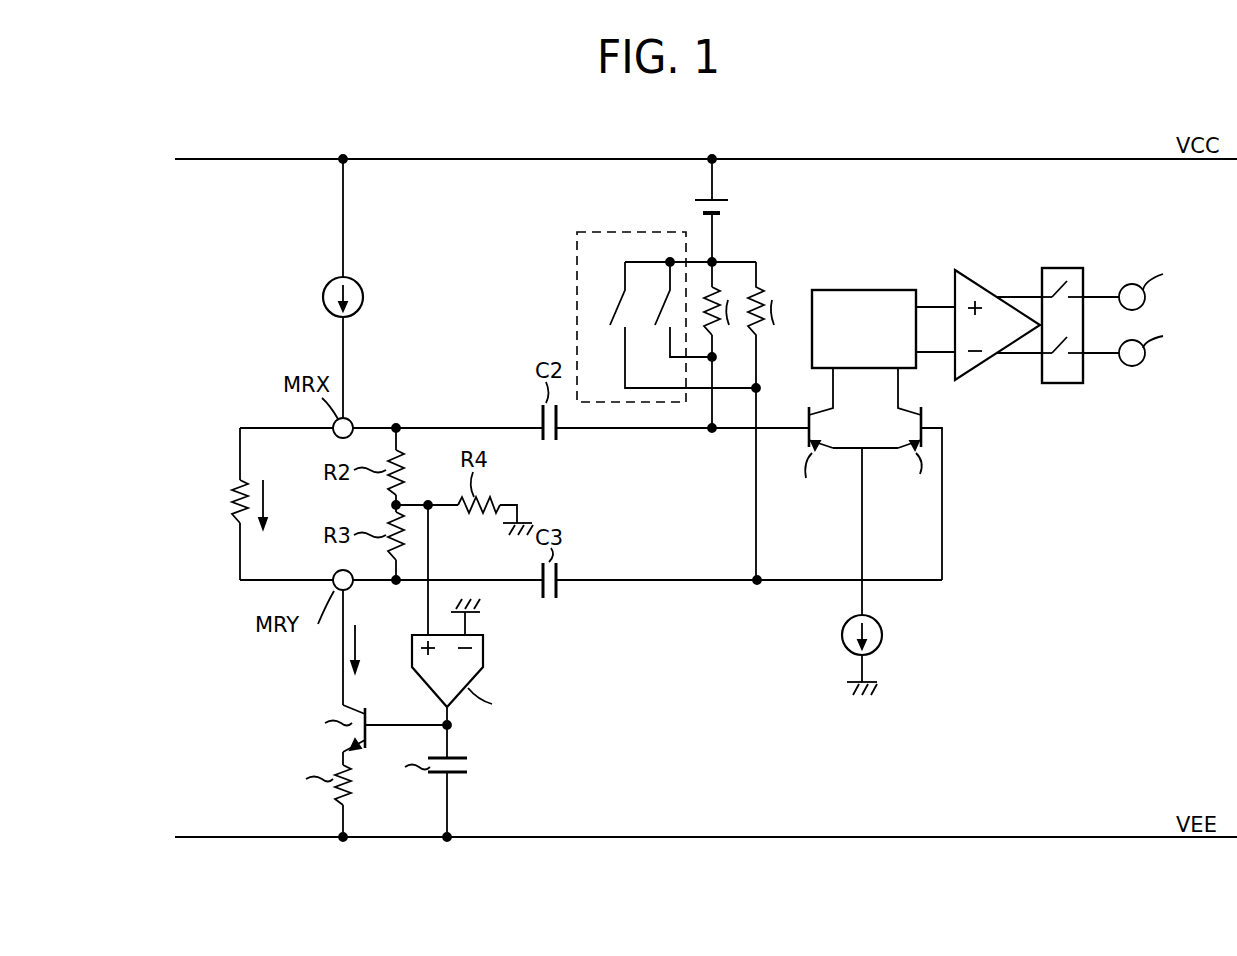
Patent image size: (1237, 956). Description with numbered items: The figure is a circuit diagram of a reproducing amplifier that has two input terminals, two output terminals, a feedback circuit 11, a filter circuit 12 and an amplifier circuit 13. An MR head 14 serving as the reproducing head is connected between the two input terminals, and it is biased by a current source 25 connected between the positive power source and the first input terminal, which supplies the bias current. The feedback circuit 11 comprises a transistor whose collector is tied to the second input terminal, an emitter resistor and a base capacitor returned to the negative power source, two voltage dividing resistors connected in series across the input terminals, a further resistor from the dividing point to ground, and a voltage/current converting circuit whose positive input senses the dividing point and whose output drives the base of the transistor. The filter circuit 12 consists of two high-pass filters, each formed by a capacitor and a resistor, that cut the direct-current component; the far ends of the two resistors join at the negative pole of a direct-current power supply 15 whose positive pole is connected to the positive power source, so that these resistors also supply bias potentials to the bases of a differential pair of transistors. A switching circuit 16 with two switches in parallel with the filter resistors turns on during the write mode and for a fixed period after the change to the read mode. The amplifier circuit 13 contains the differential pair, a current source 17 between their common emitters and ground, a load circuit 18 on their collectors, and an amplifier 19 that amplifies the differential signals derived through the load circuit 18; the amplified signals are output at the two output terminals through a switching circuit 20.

The feedback circuit 11 is at (524, 738).
The filter circuit 12 is at (629, 369).
The amplifier circuit 13 is at (928, 531).
The MR head 14 is at (232, 505).
The direct-current power supply 15 is at (768, 205).
The switching circuit 16 is at (577, 300).
The current source 17 is at (883, 635).
The load circuit 18 is at (872, 288).
The amplifier 19 is at (978, 270).
The switching circuit 20 is at (1067, 267).
The current source 25 is at (323, 297).